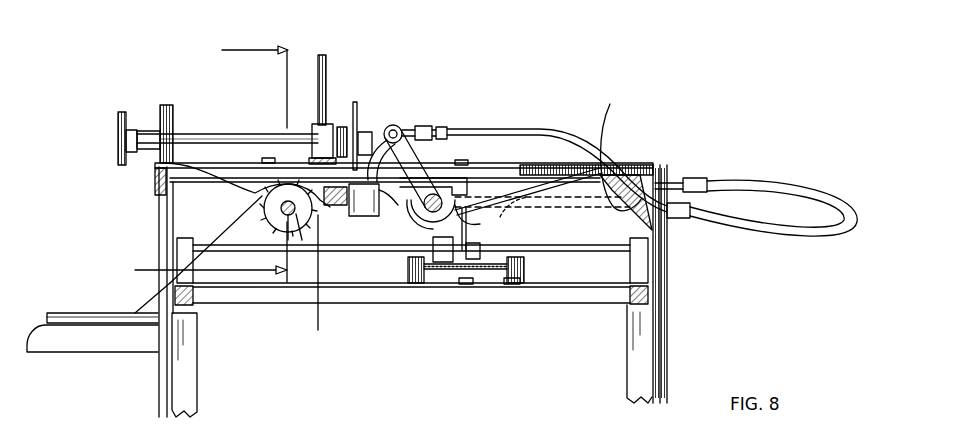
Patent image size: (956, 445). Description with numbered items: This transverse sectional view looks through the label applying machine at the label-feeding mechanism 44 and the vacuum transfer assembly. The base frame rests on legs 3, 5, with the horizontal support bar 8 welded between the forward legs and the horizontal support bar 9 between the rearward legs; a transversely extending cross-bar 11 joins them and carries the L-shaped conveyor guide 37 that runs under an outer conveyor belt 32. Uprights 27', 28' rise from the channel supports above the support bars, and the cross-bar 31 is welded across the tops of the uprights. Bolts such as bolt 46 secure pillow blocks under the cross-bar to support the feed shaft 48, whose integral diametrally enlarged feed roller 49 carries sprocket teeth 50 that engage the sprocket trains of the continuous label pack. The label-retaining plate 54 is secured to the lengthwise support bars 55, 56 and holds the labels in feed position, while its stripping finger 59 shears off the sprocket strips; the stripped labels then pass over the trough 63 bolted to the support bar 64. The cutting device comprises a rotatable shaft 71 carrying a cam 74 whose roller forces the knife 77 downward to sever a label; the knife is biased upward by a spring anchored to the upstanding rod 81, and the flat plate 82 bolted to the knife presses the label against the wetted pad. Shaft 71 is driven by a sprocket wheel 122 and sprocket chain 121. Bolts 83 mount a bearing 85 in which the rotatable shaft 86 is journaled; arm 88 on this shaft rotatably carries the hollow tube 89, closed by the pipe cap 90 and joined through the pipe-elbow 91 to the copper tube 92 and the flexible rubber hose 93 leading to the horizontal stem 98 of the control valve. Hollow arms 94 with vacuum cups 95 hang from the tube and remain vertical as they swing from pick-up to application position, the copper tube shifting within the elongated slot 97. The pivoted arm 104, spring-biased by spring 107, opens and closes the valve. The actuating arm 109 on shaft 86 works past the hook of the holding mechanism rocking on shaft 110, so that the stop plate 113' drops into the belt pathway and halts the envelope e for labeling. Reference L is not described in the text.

The leg 3 is at (660, 383).
The leg 5 is at (190, 392).
The horizontal support bar 8 is at (652, 296).
The horizontal support bar 9 is at (228, 330).
The cross-bar 11 is at (441, 302).
The upright 27' is at (684, 284).
The upright 28' is at (136, 292).
The cross-bar 31 is at (632, 168).
The conveyor belt 32 is at (463, 288).
The conveyor guide 37 is at (407, 268).
The label-feeding mechanism 44 is at (251, 240).
The bolt 46 is at (267, 158).
The feed shaft 48 is at (293, 220).
The feed roller 49 is at (306, 216).
The sprocket teeth 50 is at (292, 250).
The label-retaining plate 54 is at (198, 163).
The support bar 55 is at (316, 152).
The support bar 56 is at (155, 181).
The stripping finger 59 is at (352, 214).
The trough 63 is at (387, 216).
The support bar 64 is at (335, 205).
The rotatable shaft 71 is at (226, 134).
The cam 74 is at (340, 126).
The knife 77 is at (355, 102).
The upstanding rod 81 is at (320, 52).
The flat plate 82 is at (364, 131).
The bolt 83 is at (518, 134).
The bearing 85 is at (460, 160).
The rotatable shaft 86 is at (442, 130).
The arm 88 is at (423, 130).
The hollow tube 89 is at (400, 128).
The pipe cap 90 is at (663, 273).
The pipe-elbow 91 is at (412, 152).
The copper tube 92 is at (540, 177).
The flexible rubber hose 93 is at (737, 188).
The hollow arm 94 is at (388, 128).
The vacuum cup 95 is at (380, 190).
The elongated slot 97 is at (670, 180).
The horizontal stem 98 is at (680, 178).
The arm 104 is at (621, 148).
The spring 107 is at (622, 166).
The actuating arm 109 is at (488, 224).
The shaft 110 is at (570, 244).
The stop plate 113' is at (428, 288).
The sprocket chain 121 is at (119, 116).
The sprocket wheel 122 is at (122, 143).
The envelope e is at (493, 272).
The dimension L is at (530, 265).